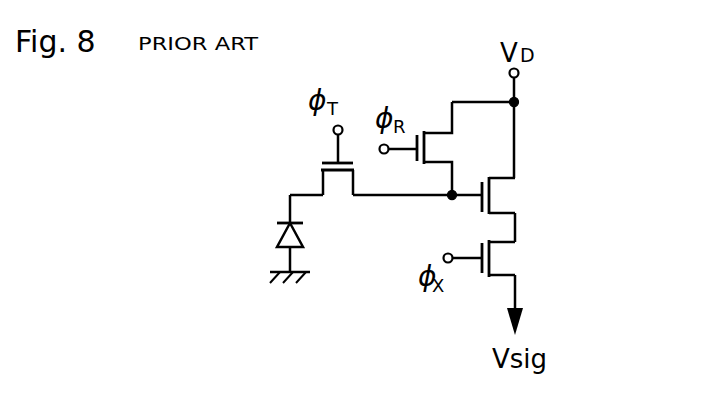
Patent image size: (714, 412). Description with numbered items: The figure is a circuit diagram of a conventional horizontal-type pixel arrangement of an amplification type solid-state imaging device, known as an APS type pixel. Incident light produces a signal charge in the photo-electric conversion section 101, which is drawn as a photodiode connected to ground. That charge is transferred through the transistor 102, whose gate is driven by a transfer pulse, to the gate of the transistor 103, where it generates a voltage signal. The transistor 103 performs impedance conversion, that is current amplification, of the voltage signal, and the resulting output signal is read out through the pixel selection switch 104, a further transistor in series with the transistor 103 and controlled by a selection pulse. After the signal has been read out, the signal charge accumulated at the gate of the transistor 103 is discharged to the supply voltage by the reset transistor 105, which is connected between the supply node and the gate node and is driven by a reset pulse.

The photo-electric conversion section 101 is at (270, 230).
The transistor 102 is at (340, 190).
The transistor 103 is at (512, 194).
The pixel selection switch 104 is at (512, 257).
The reset transistor 105 is at (435, 148).